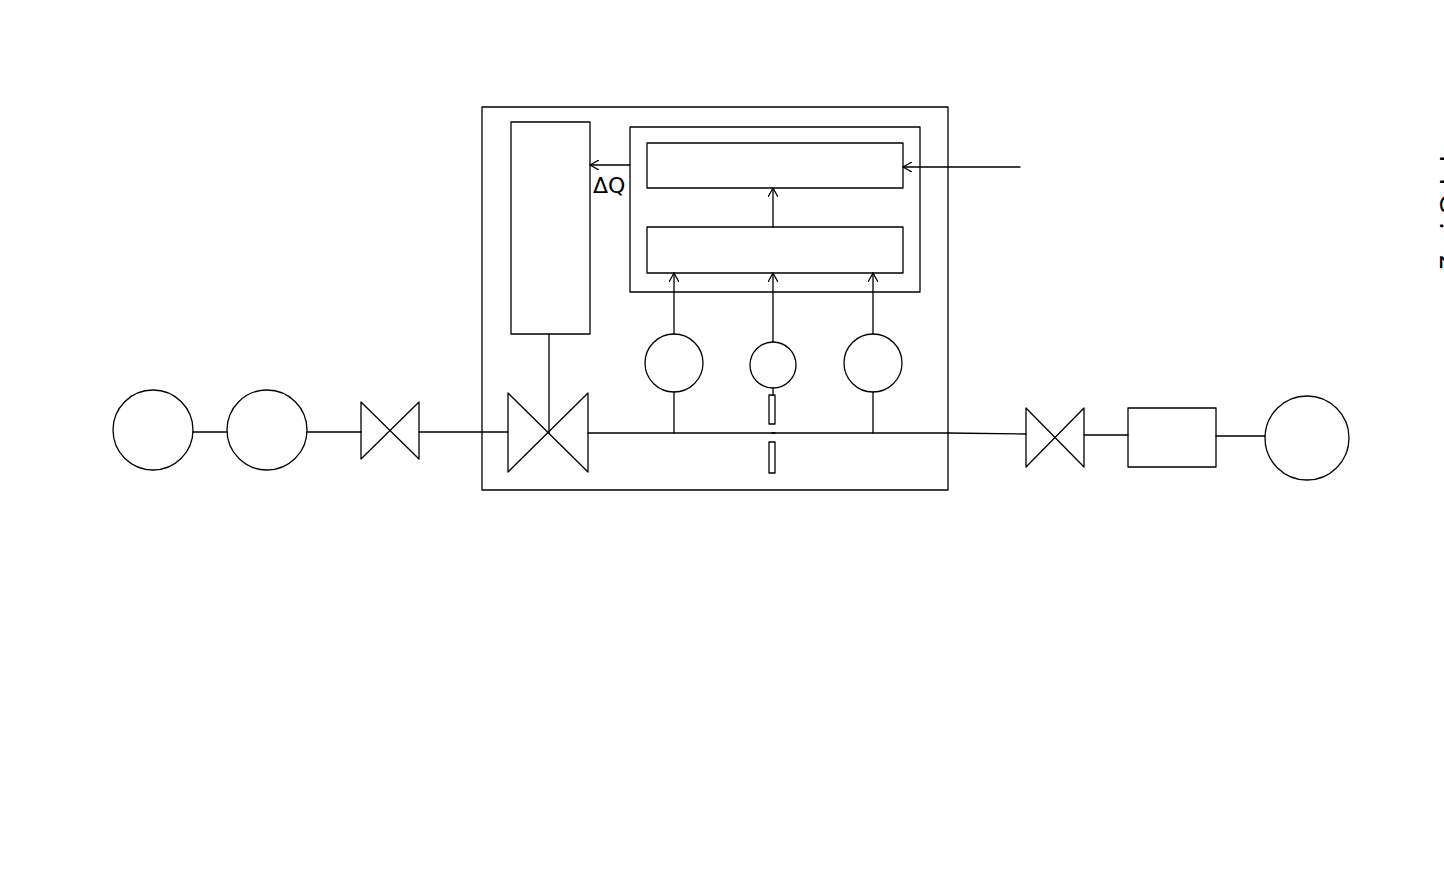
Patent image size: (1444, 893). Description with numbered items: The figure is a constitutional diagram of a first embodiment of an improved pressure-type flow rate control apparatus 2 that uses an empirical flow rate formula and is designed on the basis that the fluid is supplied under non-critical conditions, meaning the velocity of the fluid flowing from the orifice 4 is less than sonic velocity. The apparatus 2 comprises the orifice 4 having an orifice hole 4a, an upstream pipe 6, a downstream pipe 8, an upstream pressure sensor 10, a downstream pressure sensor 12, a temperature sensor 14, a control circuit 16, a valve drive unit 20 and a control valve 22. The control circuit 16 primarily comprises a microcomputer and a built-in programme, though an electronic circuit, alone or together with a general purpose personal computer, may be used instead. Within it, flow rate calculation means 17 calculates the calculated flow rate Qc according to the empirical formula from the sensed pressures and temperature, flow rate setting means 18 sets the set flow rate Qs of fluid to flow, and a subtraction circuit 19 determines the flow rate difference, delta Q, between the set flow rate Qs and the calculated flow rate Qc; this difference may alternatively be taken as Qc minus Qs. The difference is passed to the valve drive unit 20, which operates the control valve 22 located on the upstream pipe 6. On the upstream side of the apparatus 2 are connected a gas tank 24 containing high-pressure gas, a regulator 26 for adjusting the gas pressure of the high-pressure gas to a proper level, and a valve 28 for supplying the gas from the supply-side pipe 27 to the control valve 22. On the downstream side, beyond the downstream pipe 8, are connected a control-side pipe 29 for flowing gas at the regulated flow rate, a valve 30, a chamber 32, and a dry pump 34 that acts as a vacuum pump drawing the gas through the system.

The improved pressure-type flow rate control apparatus 2 is at (765, 107).
The orifice 4 is at (768, 467).
The orifice hole 4a is at (776, 440).
The upstream pipe 6 is at (724, 433).
The downstream pipe 8 is at (851, 433).
The upstream pressure sensor 10 is at (647, 372).
The downstream pressure sensor 12 is at (897, 383).
The temperature sensor 14 is at (792, 380).
The control circuit 16 is at (920, 268).
The flow rate calculation means 17 is at (903, 243).
The flow rate setting means 18 is at (985, 166).
The subtraction circuit 19 is at (848, 143).
The valve drive unit 20 is at (546, 135).
The control valve 22 is at (525, 445).
The gas tank 24 is at (158, 455).
The regulator 26 is at (268, 455).
The supply-side pipe 27 is at (447, 435).
The valve 28 is at (405, 445).
The control-side pipe 29 is at (978, 437).
The valve 30 is at (1047, 445).
The chamber 32 is at (1195, 467).
The dry pump 34 is at (1298, 465).